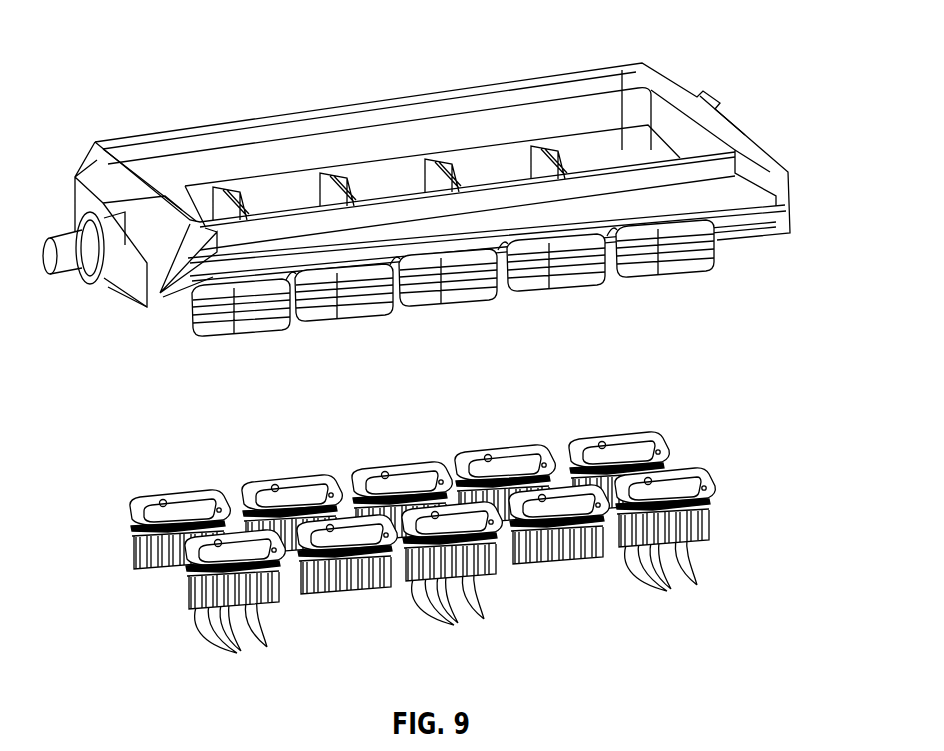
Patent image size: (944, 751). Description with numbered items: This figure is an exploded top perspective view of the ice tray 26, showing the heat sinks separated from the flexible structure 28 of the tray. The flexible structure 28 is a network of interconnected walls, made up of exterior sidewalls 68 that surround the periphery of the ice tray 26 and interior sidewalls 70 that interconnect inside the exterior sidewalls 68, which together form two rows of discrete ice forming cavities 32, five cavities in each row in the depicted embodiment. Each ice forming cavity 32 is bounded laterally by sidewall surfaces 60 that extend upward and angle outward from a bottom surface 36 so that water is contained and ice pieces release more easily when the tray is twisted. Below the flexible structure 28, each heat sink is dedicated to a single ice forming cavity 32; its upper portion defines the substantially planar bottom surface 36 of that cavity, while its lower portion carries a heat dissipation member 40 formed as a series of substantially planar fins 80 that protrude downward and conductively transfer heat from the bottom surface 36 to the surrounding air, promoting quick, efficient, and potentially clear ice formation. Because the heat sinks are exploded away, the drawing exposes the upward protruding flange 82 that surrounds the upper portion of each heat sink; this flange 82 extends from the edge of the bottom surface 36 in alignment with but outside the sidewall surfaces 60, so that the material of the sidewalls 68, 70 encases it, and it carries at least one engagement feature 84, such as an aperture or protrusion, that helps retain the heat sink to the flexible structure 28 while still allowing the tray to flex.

The ice tray 26 is at (143, 64).
The flexible structure 28 is at (435, 103).
The sidewall surfaces 60 is at (592, 152).
The exterior sidewalls 68 is at (250, 298).
The interior sidewalls 70 is at (293, 298).
The ice forming cavities 32 is at (467, 160).
The bottom surface 36 is at (150, 521).
The heat dissipation member 40 is at (188, 600).
The upward protruding flange 82 is at (145, 504).
The engagement feature 84 is at (273, 480).
The fins 80 is at (232, 645).